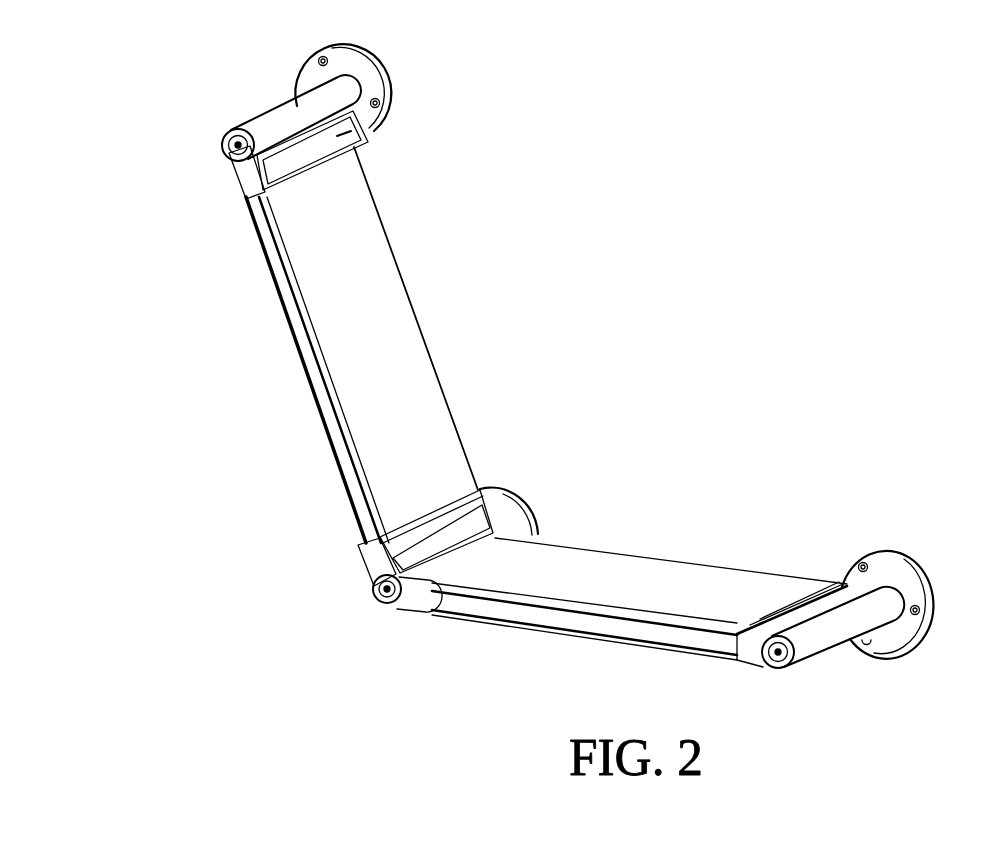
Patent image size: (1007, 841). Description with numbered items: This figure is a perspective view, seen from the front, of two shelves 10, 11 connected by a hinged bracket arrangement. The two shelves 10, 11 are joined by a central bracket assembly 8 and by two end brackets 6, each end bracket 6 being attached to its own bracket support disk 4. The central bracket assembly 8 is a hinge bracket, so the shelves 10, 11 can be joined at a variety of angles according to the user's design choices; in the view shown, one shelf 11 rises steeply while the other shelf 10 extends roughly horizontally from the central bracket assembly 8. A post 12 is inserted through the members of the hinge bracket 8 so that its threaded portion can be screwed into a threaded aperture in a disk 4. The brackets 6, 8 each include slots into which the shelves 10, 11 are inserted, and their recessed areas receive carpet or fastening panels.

The bracket support disk 4 is at (366, 56).
The end bracket 6 is at (222, 162).
The central bracket assembly 8 is at (388, 640).
The shelf 10 is at (610, 568).
The shelf 11 is at (405, 347).
The post 12 is at (387, 592).